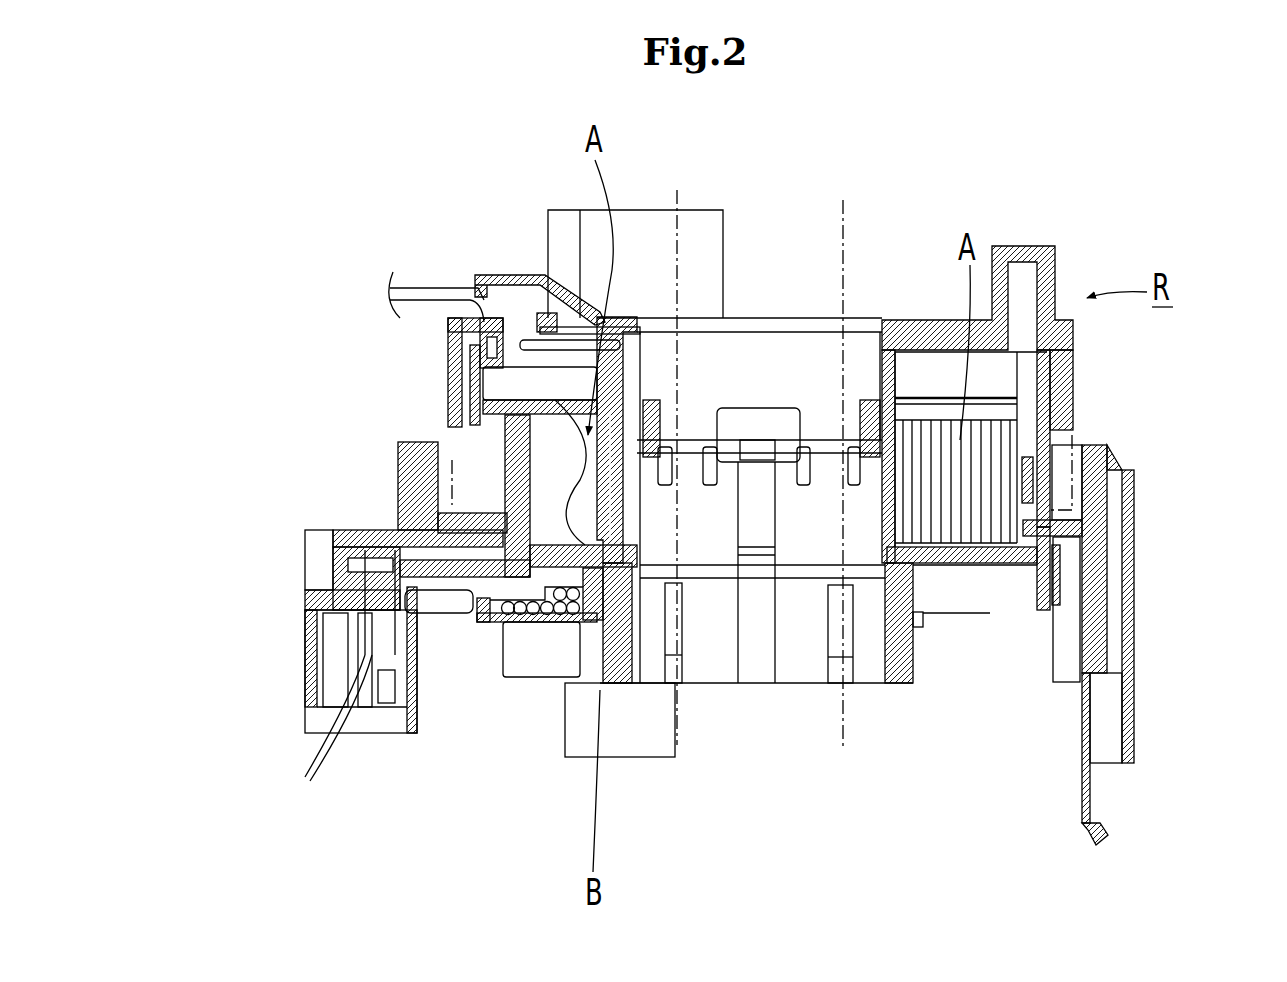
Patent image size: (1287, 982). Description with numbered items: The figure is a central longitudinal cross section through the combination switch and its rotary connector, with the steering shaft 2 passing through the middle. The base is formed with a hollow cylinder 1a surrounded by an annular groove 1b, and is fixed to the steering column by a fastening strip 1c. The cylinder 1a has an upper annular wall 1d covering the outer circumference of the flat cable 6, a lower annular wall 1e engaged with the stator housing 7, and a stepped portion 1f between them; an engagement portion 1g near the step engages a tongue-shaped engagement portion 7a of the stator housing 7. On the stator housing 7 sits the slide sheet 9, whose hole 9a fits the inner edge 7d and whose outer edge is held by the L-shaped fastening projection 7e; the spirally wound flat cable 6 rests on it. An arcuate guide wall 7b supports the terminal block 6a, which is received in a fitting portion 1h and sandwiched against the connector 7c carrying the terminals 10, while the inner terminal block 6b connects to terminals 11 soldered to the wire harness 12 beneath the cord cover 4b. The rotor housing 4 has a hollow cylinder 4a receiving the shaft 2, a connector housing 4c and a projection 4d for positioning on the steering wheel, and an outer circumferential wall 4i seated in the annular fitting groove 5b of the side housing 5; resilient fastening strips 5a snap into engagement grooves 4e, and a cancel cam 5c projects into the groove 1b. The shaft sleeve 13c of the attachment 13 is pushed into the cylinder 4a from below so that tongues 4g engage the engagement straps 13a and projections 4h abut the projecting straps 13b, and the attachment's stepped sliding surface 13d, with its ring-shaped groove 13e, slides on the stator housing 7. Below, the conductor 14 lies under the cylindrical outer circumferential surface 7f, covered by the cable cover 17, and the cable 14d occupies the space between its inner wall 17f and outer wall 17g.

The hollow cylinder 1a is at (398, 545).
The annular groove 1b is at (445, 505).
The fastening strip 1c is at (1108, 825).
The upper annular wall 1d is at (400, 467).
The lower annular wall 1e is at (1087, 627).
The stepped portion 1f is at (1053, 553).
The engagement portion 1g is at (1060, 580).
The fitting portion 1h is at (485, 605).
The steering shaft 2 is at (842, 250).
The rotor housing 4 is at (930, 320).
The hollow cylinder 4a is at (882, 352).
The cord cover 4b is at (497, 275).
The connector housing 4c is at (697, 352).
The projection 4d is at (1048, 248).
The engagement grooves 4e is at (445, 335).
The tongues 4g is at (768, 440).
The projections 4h is at (660, 405).
The outer circumferential wall 4i is at (448, 340).
The side housing 5 is at (446, 374).
The resilient fastening strips 5a is at (447, 315).
The annular fitting groove 5b is at (448, 378).
The cancel cam 5c is at (455, 490).
The flat cable 6 is at (1000, 440).
The terminal block 6a is at (510, 437).
The terminal block 6b is at (622, 420).
The stator housing 7 is at (437, 612).
The tongue-shaped engagement portion 7a is at (1060, 600).
The guide wall 7b is at (575, 455).
The connector 7c is at (320, 672).
The inner edge 7d is at (632, 547).
The L-shaped fastening projection 7e is at (1003, 607).
The cylindrical outer circumferential surface 7f is at (1040, 617).
The slide sheet 9 is at (645, 590).
The hole 9a is at (635, 532).
The terminals 10 is at (306, 779).
The terminals 11 is at (600, 330).
The wire harness 12 is at (437, 292).
The attachment 13 is at (622, 580).
The engagement straps 13a is at (825, 440).
The projecting straps 13b is at (695, 425).
The shaft sleeve 13c is at (790, 683).
The stepped sliding surface 13d is at (650, 590).
The ring-shaped groove 13e is at (665, 585).
The conductor 14 is at (520, 625).
The cable 14d is at (548, 622).
The cable cover 17 is at (515, 680).
The inner wall 17f is at (620, 683).
The outer wall 17g is at (445, 605).